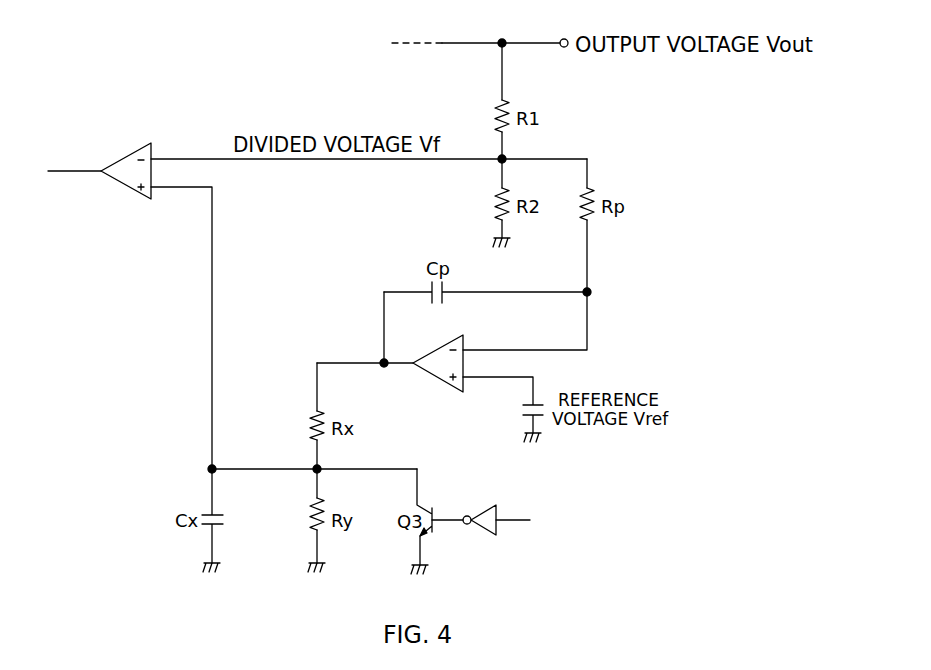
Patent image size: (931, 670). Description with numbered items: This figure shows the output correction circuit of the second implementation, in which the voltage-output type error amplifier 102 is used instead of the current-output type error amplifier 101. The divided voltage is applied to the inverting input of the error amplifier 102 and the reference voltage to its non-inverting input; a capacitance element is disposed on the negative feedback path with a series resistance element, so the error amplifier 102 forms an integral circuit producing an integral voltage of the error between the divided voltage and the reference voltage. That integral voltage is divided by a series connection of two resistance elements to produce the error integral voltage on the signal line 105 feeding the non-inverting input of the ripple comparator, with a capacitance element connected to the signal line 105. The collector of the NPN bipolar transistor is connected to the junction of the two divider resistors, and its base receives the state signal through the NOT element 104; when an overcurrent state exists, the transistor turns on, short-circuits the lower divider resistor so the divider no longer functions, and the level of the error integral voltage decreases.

The current-output type error amplifier 101 is at (140, 149).
The voltage-output type error amplifier 102 is at (435, 351).
The NOT element 104 is at (488, 508).
The signal line 105 is at (212, 280).